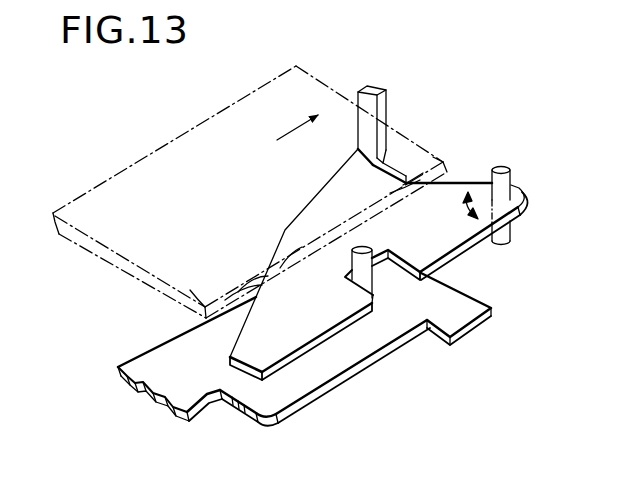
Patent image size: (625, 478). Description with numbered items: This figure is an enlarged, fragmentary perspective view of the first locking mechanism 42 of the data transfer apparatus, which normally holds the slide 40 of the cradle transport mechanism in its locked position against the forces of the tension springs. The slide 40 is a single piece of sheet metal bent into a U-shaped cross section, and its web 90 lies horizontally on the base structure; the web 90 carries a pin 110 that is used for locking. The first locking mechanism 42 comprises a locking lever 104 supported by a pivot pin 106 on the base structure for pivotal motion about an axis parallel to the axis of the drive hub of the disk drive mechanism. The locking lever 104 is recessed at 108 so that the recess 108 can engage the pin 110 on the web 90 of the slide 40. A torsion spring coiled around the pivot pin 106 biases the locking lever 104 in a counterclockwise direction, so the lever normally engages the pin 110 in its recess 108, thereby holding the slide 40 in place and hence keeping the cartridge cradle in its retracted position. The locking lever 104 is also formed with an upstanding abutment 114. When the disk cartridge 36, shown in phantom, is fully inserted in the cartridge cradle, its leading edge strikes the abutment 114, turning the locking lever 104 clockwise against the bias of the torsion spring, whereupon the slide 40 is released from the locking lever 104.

The disk cartridge 36 is at (113, 255).
The slide 40 is at (304, 355).
The first locking mechanism 42 is at (542, 184).
The web 90 is at (273, 398).
The locking lever 104 is at (450, 192).
The pivot pin 106 is at (507, 183).
The recess 108 is at (420, 272).
The pin 110 is at (373, 278).
The upstanding abutment 114 is at (382, 92).